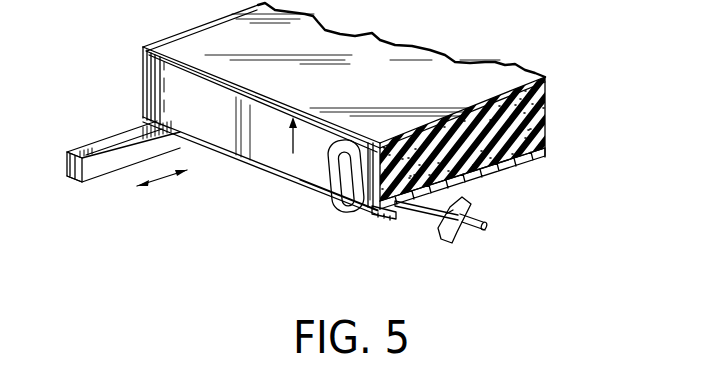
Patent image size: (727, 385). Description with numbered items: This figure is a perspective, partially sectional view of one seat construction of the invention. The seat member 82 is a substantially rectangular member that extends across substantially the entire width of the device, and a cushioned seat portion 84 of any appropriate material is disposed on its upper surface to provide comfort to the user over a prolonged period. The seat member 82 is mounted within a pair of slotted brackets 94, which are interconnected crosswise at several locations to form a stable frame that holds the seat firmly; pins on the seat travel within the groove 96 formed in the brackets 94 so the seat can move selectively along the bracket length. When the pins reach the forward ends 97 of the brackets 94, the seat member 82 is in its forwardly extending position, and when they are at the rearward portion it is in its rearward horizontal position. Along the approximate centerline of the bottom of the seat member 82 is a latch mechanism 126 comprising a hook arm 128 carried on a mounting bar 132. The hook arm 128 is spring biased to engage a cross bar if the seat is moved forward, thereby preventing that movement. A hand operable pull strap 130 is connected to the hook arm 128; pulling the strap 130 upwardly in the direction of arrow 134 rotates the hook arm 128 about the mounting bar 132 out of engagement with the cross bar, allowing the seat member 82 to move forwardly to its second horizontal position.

The seat member 82 is at (532, 165).
The cushioned seat portion 84 is at (450, 75).
The slotted brackets 94 is at (113, 138).
The groove 96 is at (113, 155).
The forward ends 97 is at (72, 168).
The latch mechanism 126 is at (434, 224).
The hook arm 128 is at (457, 233).
The pull strap 130 is at (335, 168).
The mounting bar 132 is at (472, 212).
The arrow 134 is at (288, 148).